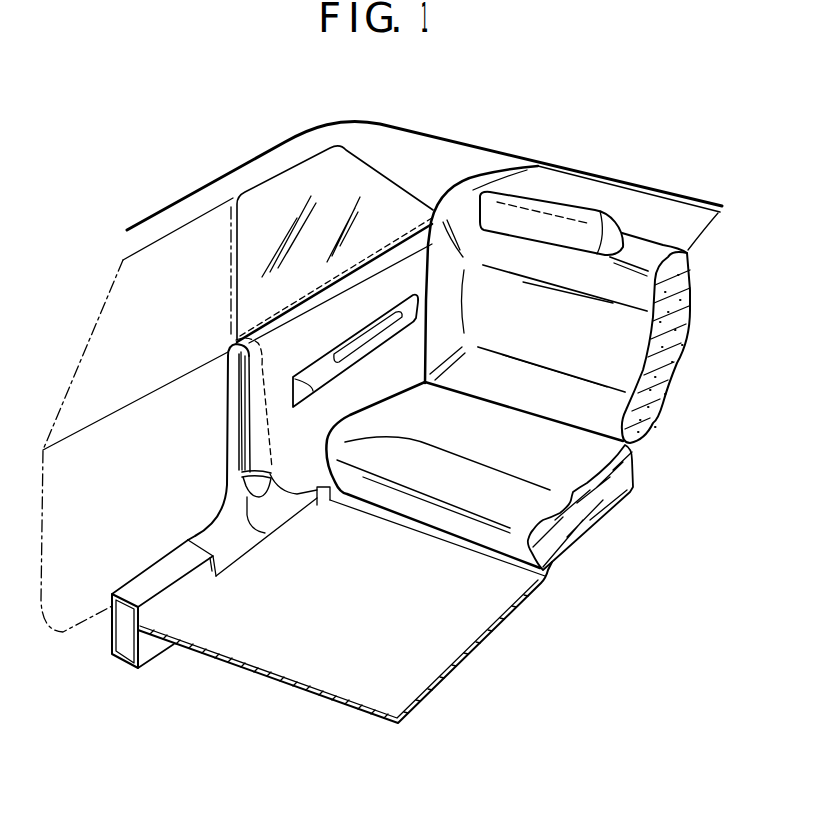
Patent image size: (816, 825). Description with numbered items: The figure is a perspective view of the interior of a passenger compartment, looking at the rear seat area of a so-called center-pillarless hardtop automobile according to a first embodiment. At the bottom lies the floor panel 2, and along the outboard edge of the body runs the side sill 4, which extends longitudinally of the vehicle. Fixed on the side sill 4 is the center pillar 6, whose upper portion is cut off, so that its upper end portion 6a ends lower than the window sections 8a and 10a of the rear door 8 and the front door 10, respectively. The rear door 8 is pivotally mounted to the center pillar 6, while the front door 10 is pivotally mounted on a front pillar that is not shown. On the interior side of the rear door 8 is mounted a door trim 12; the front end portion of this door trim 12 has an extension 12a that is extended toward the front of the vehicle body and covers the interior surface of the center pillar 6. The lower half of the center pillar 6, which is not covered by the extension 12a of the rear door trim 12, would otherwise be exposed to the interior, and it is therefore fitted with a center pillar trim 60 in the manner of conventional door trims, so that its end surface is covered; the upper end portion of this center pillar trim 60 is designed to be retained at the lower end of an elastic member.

The floor panel 2 is at (462, 643).
The side sill 4 is at (146, 569).
The center pillar 6 is at (228, 458).
The upper end portion of the center pillar 6a is at (230, 354).
The rear door 8 is at (273, 331).
The window section of the rear door 8a is at (288, 186).
The front door 10 is at (80, 363).
The window section of the front door 10a is at (98, 404).
The door trim 12 is at (362, 394).
The extension of the door trim 12a is at (254, 400).
The center pillar trim 60 is at (262, 487).